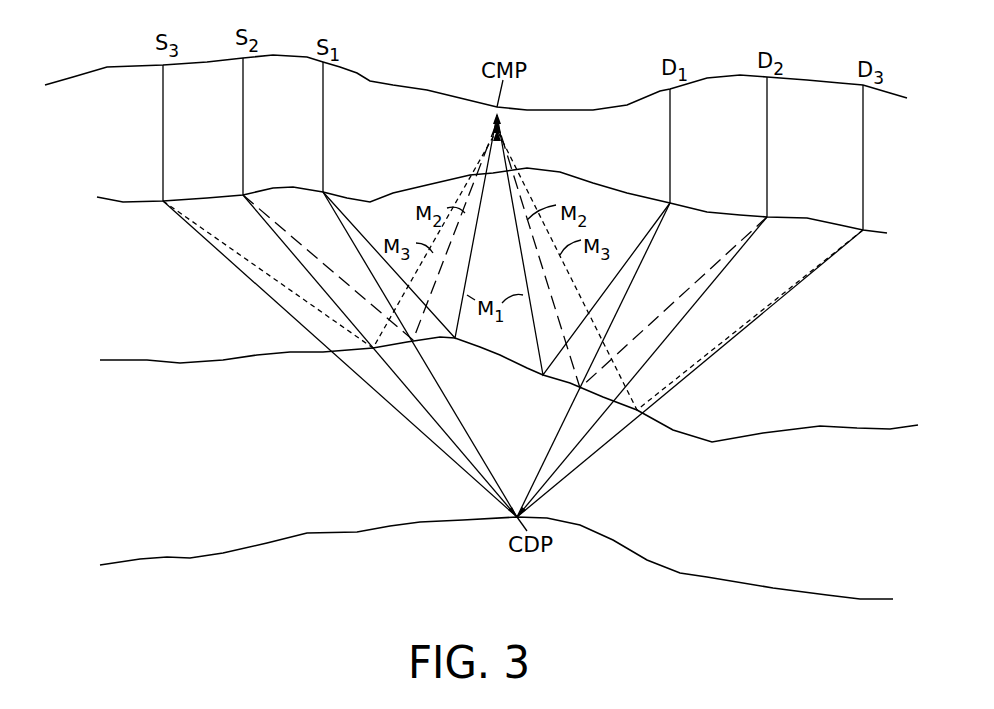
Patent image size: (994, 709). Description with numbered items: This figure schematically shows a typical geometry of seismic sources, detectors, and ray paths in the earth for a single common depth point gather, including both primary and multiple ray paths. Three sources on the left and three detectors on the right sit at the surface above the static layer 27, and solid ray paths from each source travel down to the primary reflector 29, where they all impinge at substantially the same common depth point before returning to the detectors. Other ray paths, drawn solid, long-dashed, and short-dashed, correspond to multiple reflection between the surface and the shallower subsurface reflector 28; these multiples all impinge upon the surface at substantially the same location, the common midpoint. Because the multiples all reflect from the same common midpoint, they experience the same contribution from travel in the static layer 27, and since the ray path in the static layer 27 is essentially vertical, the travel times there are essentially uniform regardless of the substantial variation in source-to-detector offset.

The static layer 27 is at (130, 151).
The subsurface reflector 28 is at (182, 363).
The primary reflector 29 is at (192, 557).